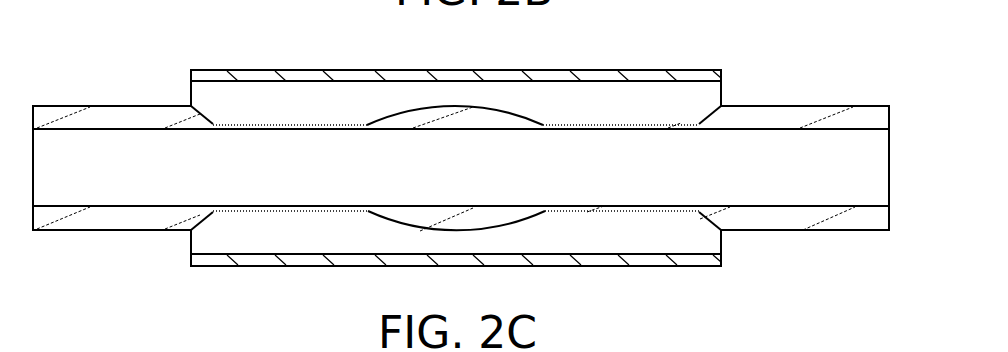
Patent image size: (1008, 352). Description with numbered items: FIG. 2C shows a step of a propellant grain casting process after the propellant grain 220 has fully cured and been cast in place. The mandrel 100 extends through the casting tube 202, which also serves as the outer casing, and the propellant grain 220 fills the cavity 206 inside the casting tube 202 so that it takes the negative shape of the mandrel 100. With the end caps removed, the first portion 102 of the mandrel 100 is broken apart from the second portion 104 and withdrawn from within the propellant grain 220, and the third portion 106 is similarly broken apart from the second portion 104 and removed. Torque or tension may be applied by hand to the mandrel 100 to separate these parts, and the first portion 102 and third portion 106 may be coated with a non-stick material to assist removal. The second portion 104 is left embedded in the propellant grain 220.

The mandrel 100 is at (63, 107).
The first portion 102 is at (323, 122).
The second portion 104 is at (460, 108).
The third portion 106 is at (663, 124).
The casting tube 202 is at (593, 72).
The cavity 206 is at (610, 112).
The propellant grain 220 is at (293, 100).